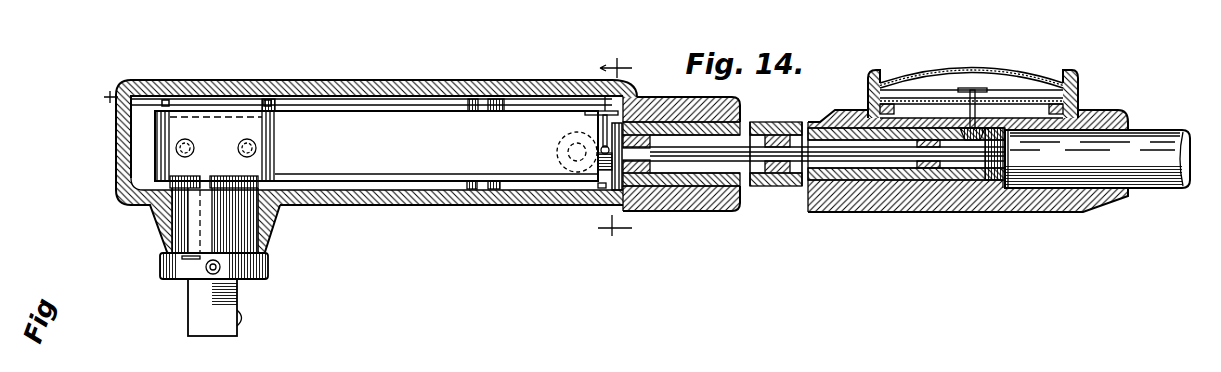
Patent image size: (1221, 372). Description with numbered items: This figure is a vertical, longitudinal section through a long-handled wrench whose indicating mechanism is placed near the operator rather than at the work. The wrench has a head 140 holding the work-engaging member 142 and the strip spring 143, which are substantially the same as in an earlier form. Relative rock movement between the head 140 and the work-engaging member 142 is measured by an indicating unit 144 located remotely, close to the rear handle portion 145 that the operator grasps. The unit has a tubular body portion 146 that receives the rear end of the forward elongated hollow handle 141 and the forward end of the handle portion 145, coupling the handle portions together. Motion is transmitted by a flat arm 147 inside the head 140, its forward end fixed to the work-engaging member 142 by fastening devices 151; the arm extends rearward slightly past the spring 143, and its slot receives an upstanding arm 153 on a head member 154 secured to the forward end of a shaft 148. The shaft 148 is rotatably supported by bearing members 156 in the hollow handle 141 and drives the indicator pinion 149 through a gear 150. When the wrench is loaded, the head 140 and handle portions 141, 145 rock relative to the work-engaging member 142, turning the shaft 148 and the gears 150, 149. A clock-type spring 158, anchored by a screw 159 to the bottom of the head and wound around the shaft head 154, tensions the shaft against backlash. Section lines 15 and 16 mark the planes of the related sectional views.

The section line 15 is at (101, 98).
The section line 16 is at (618, 153).
The head 140 is at (437, 198).
The elongated hollow handle 141 is at (773, 121).
The work-engaging member 142 is at (224, 228).
The strip spring 143 is at (376, 144).
The indicating unit 144 is at (1080, 83).
The handle portion 145 is at (1168, 222).
The tubular body portion 146 is at (1117, 118).
The flat arm 147 is at (348, 111).
The shaft 148 is at (822, 162).
The indicator pinion 149 is at (980, 138).
The gear 150 is at (972, 186).
The fastening devices 151 is at (268, 100).
The upstanding arm 153 is at (605, 96).
The head member 154 is at (604, 172).
The bearing members 156 is at (928, 181).
The clock-type spring 158 is at (630, 188).
The screw 159 is at (613, 195).